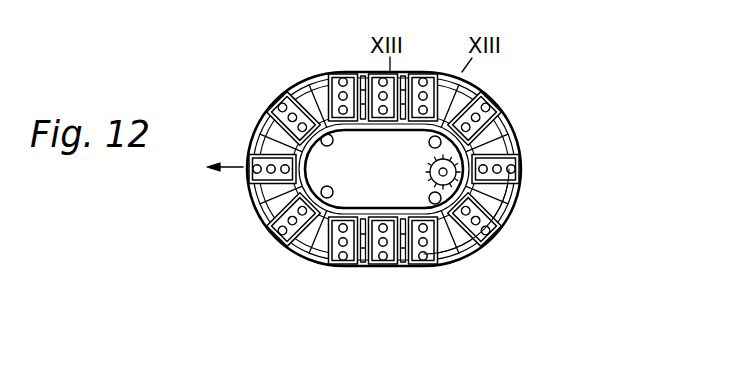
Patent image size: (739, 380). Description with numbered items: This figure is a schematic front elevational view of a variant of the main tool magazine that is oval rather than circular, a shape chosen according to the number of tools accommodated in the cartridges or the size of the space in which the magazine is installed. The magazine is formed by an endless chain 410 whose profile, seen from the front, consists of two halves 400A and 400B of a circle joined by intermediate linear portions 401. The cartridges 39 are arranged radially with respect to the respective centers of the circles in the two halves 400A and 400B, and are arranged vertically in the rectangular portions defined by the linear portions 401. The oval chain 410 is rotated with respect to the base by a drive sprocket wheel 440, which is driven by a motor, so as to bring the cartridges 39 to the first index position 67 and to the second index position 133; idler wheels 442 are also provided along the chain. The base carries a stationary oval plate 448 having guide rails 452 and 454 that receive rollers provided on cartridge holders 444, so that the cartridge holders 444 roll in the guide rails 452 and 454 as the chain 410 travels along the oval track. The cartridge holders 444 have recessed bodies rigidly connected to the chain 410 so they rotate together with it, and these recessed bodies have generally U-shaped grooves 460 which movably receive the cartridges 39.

The cartridges 39 is at (505, 188).
The first index position 67 is at (425, 72).
The second index position 133 is at (232, 168).
The half of a circle 400A is at (486, 108).
The half of a circle 400B is at (262, 139).
The intermediate linear portions 401 is at (363, 76).
The endless chain 410 is at (600, 135).
The drive sprocket wheel 440 is at (518, 165).
The idler wheels 442 is at (312, 85).
The cartridge holders 444 is at (282, 90).
The stationary oval plate 448 is at (507, 218).
The guide rail 452 is at (464, 262).
The guide rail 454 is at (312, 265).
The U-shaped grooves 460 is at (498, 108).